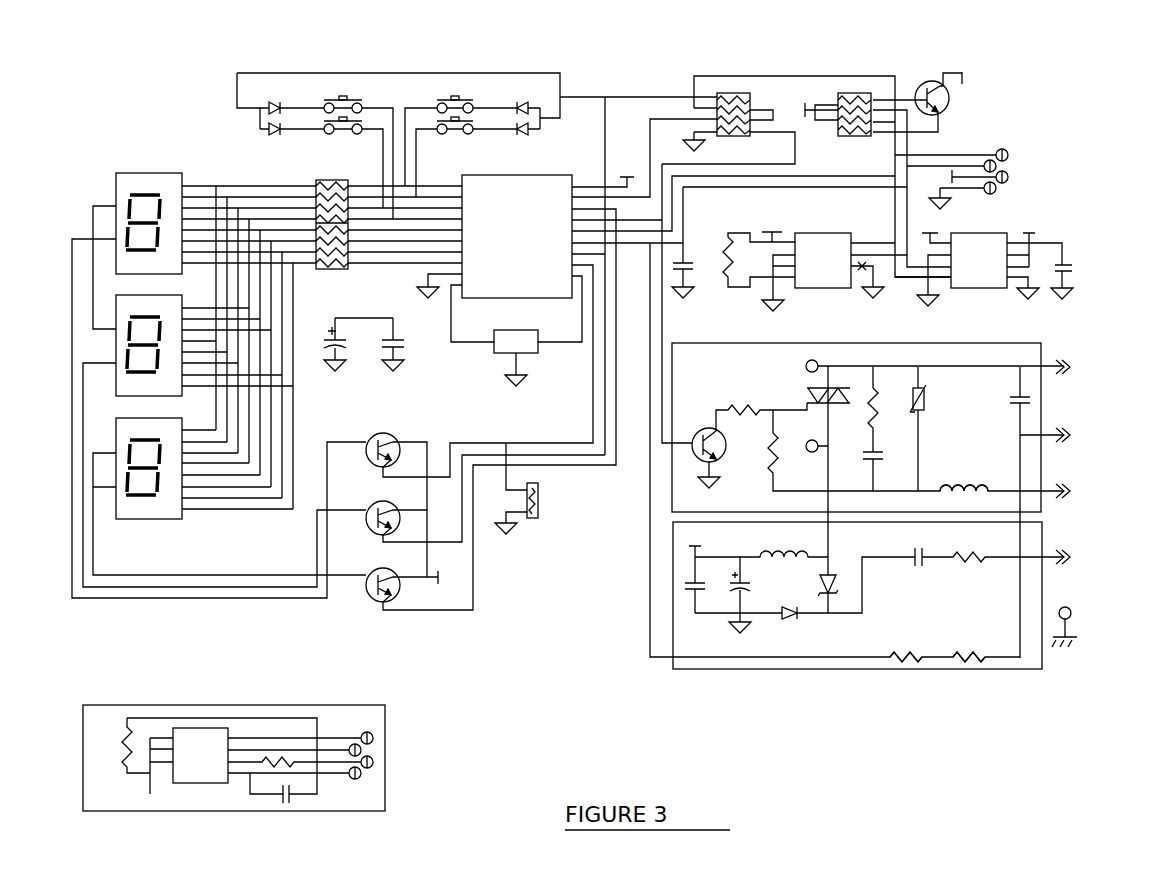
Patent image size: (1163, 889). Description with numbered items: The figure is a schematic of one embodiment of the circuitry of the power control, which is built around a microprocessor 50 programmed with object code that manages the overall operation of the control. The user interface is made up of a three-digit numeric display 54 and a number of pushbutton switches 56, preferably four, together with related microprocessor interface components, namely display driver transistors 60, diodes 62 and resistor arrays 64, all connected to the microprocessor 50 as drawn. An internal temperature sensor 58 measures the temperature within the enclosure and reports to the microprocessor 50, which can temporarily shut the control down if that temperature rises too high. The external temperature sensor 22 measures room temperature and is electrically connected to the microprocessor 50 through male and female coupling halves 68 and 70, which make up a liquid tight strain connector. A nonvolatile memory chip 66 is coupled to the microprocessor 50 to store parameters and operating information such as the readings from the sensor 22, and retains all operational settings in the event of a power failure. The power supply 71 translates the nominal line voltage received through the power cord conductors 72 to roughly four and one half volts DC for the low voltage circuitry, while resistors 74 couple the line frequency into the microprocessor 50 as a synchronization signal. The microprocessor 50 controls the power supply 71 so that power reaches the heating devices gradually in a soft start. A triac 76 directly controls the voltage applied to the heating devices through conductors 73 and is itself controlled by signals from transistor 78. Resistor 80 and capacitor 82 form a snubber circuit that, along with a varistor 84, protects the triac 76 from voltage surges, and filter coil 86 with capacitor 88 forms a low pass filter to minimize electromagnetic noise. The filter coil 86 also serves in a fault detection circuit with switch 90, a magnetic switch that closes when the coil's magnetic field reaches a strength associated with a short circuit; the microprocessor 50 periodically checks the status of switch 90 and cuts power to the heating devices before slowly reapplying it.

The external temperature sensor 22 is at (252, 700).
The microprocessor 50 is at (535, 195).
The 3-digit numeric display 54 is at (108, 168).
The pushbutton switches 56 is at (336, 100).
The internal temperature sensor 58 is at (812, 237).
The display driver transistors 60 is at (372, 602).
The diodes 62 is at (248, 129).
The resistor arrays 64 is at (845, 93).
The nonvolatile memory chip 66 is at (990, 235).
The male coupling half 68 is at (368, 733).
The female coupling half 70 is at (1010, 150).
The power supply 71 is at (655, 620).
The power cord conductors 72 is at (1068, 497).
The conductors 73 is at (1067, 360).
The resistors 74 is at (968, 660).
The triac 76 is at (845, 388).
The transistor 78 is at (705, 428).
The resistor 80 is at (873, 398).
The capacitor 82 is at (878, 450).
The varistor 84 is at (922, 397).
The filter coil 86 is at (963, 480).
The capacitor 88 is at (1030, 400).
The switch 90 is at (540, 510).